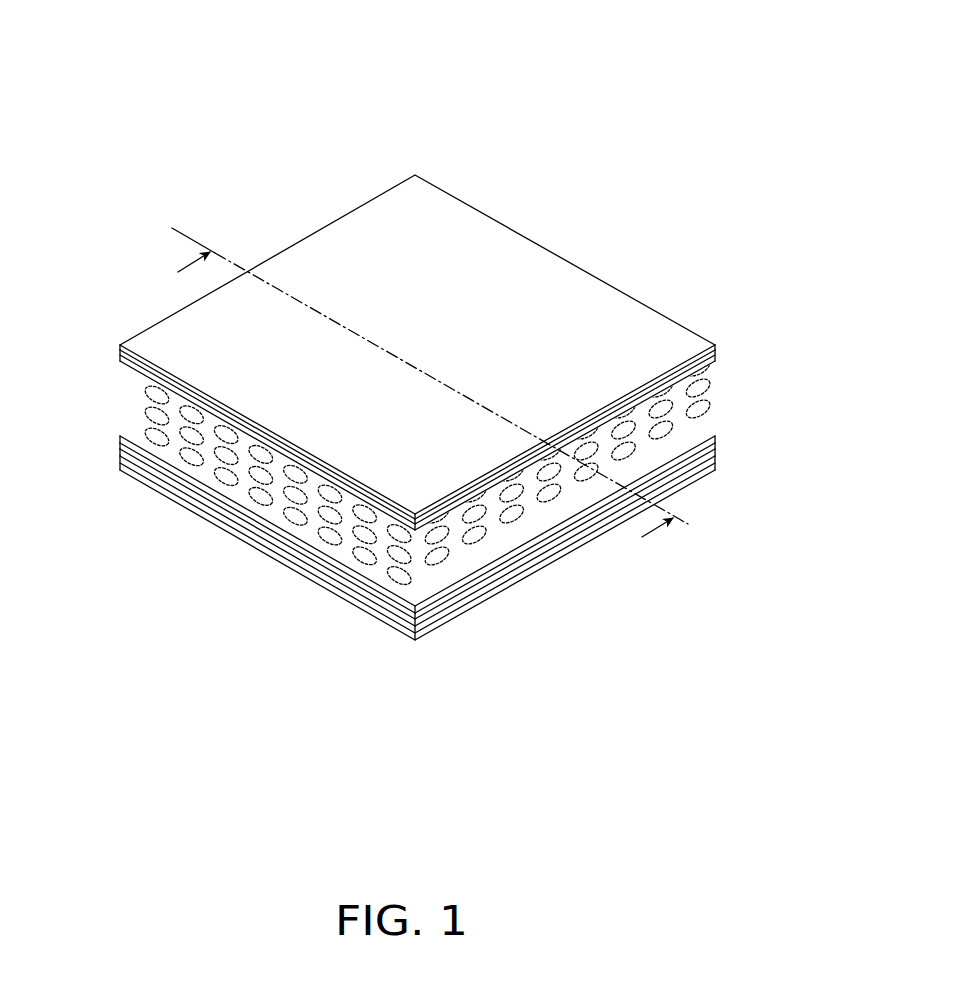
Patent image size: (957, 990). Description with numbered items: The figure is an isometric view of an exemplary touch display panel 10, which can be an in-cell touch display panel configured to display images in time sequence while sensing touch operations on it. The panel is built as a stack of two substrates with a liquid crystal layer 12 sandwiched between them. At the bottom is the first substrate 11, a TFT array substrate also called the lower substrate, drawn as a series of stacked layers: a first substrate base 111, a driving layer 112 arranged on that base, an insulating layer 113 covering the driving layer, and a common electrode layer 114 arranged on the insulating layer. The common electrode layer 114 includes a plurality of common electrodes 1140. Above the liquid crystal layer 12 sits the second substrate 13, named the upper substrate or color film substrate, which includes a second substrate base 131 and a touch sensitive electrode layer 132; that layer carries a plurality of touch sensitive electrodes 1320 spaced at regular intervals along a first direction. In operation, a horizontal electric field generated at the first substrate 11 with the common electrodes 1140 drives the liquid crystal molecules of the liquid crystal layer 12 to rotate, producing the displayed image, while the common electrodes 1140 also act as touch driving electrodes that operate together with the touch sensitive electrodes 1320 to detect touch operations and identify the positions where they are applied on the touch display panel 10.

The touch display panel 10 is at (415, 345).
The first substrate 11 is at (414, 530).
The first substrate base 111 is at (697, 483).
The driving layer 112 is at (715, 462).
The insulating layer 113 is at (715, 452).
The common electrode layer 114 is at (712, 440).
The common electrodes 1140 is at (498, 565).
The liquid crystal layer 12 is at (400, 471).
The second substrate 13 is at (415, 352).
The second substrate base 131 is at (713, 347).
The touch sensitive electrode layer 132 is at (716, 357).
The touch sensitive electrodes 1320 is at (121, 361).